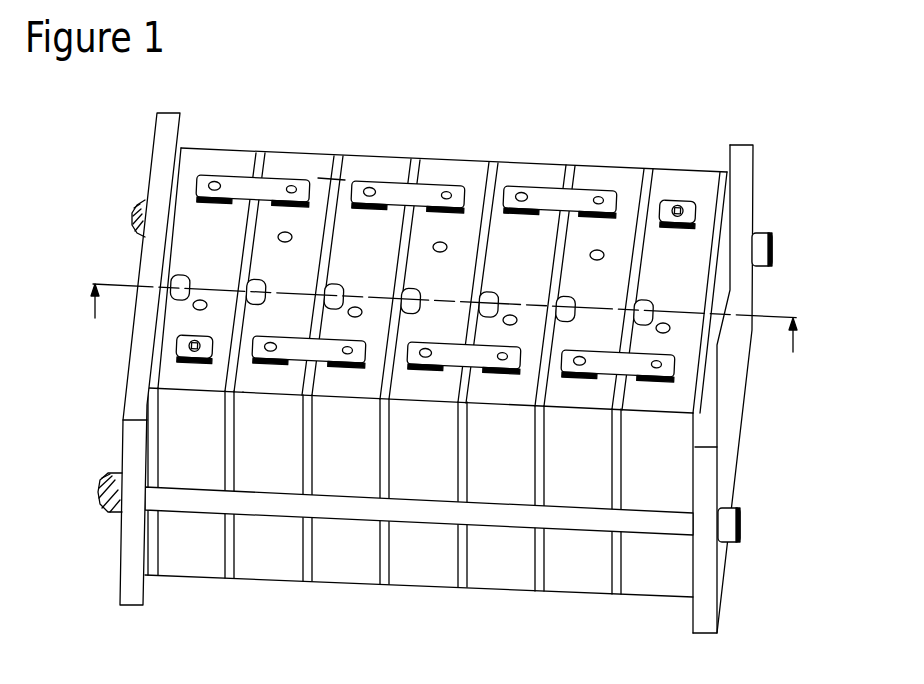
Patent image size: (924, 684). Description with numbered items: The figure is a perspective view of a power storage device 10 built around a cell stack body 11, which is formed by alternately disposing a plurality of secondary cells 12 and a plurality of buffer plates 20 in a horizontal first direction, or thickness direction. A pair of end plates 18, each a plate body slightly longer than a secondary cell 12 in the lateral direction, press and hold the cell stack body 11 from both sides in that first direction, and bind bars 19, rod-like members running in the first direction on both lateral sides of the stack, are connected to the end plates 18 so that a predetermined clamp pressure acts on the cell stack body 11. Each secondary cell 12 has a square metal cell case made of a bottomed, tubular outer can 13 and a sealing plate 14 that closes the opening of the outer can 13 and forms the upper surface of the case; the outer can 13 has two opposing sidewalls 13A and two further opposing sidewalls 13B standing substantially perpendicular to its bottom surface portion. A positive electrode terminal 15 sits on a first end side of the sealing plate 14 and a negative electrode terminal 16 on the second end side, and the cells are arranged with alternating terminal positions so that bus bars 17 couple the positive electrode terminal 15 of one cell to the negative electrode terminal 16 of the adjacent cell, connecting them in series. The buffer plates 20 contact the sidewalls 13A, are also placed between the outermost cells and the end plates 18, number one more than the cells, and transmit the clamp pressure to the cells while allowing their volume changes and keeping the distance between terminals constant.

The power storage device 10 is at (778, 63).
The cell stack body 11 is at (706, 150).
The secondary cell 12 is at (528, 179).
The outer can 13 is at (246, 574).
The sidewall 13A is at (303, 572).
The sidewall 13B is at (268, 572).
The sealing plate 14 is at (299, 163).
The positive electrode terminal 15 is at (175, 345).
The negative electrode terminal 16 is at (678, 205).
The bus bar 17 is at (394, 177).
The end plate 18 is at (130, 557).
The bind bar 19 is at (657, 522).
The buffer plate 20 is at (467, 573).